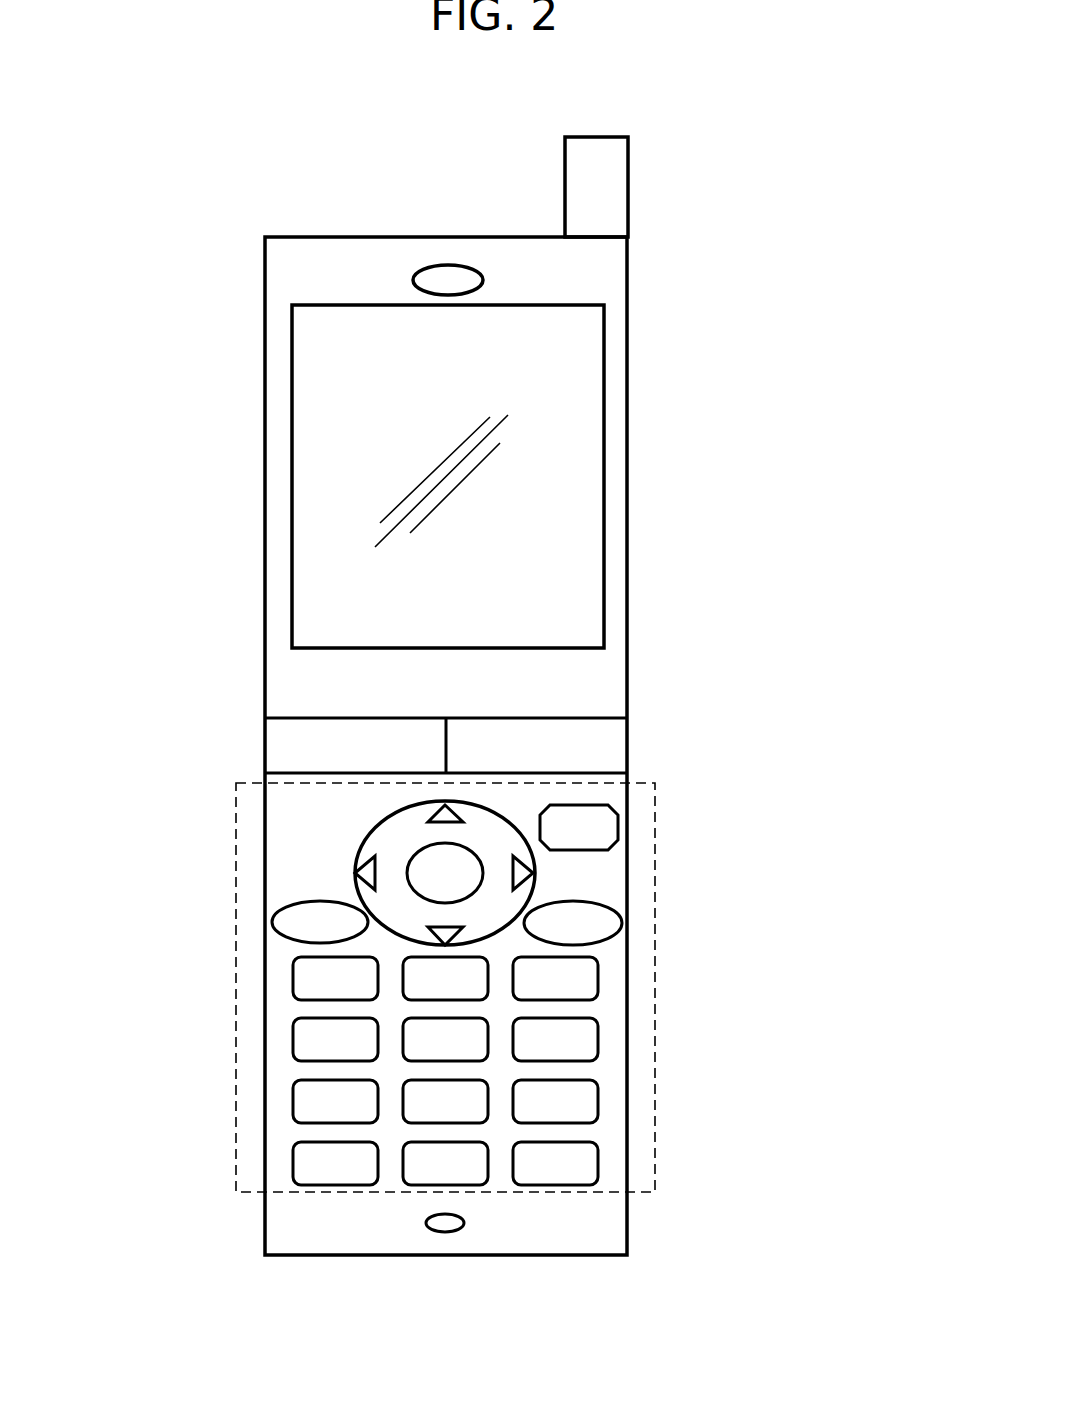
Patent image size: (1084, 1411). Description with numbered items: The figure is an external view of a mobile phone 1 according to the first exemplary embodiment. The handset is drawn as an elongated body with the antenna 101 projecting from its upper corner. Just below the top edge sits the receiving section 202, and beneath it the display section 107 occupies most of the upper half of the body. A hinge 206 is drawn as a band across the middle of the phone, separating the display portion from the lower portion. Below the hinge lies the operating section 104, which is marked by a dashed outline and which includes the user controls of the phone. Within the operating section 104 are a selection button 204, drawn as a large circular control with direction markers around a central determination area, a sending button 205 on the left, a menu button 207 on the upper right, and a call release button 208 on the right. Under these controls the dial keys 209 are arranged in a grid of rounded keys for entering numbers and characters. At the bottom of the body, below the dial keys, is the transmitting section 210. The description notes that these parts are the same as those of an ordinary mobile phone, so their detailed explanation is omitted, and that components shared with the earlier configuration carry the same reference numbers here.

The mobile phone 1 is at (645, 445).
The antenna 101 is at (629, 174).
The receiving section 202 is at (448, 265).
The display section 107 is at (290, 347).
The hinge 206 is at (558, 744).
The selection button 204 is at (400, 808).
The sending button 205 is at (297, 903).
The menu button 207 is at (617, 812).
The call release button 208 is at (612, 907).
The operating section 104 is at (666, 1064).
The dial keys 209 is at (220, 952).
The transmitting section 210 is at (447, 1232).